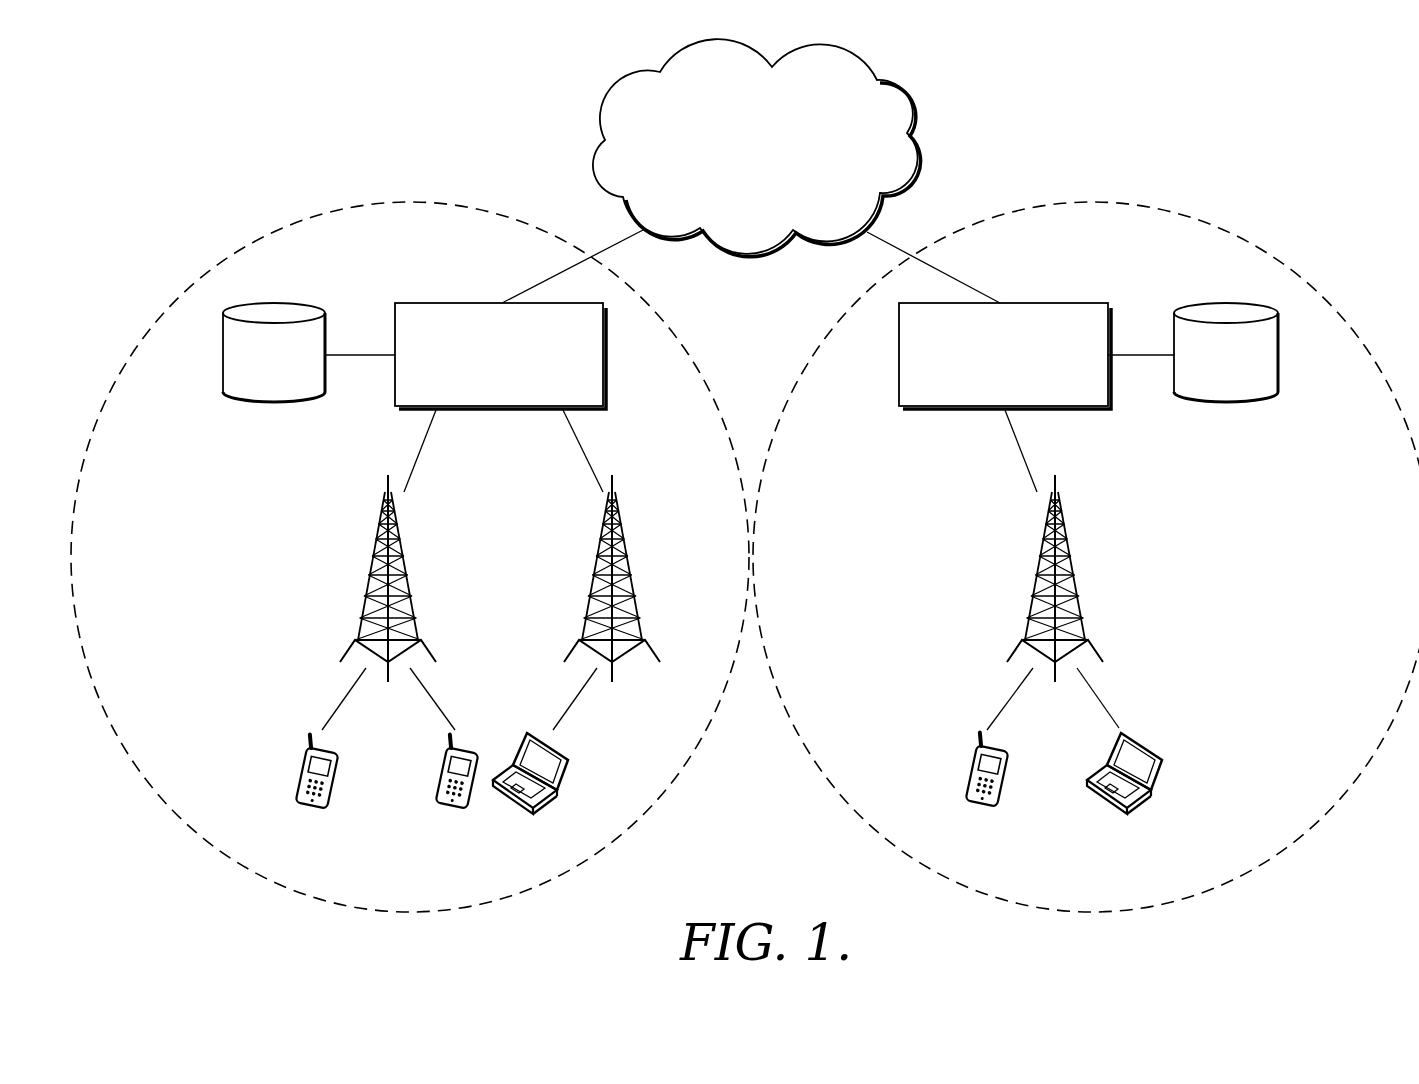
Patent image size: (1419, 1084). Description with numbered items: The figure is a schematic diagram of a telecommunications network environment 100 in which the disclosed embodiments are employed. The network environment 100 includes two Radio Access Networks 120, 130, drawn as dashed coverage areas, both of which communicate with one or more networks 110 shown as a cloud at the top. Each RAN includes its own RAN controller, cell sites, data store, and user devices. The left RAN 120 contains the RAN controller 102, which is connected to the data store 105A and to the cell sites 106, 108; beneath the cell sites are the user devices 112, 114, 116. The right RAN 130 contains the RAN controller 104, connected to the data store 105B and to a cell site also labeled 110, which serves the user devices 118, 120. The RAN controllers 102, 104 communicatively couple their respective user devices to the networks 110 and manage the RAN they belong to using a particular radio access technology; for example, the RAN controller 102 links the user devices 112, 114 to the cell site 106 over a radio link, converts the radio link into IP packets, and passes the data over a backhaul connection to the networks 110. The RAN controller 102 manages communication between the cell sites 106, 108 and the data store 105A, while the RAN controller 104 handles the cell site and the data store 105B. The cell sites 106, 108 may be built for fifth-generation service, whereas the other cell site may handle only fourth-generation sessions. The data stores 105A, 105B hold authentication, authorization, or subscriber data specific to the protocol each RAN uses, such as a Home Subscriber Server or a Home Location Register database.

The network environment 100 is at (150, 131).
The RAN controller 102 is at (457, 301).
The RAN controller 104 is at (1047, 301).
The data store 105A is at (278, 411).
The data store 105B is at (1223, 411).
The cell site 106 is at (383, 553).
The cell site 108 is at (623, 553).
The network(s) 110 is at (1072, 553).
The user device 112 is at (318, 808).
The user device 114 is at (457, 808).
The user device 116 is at (513, 805).
The user device 118 is at (988, 808).
The Radio Access Network 120 is at (268, 229).
The Radio Access Network 130 is at (1243, 229).